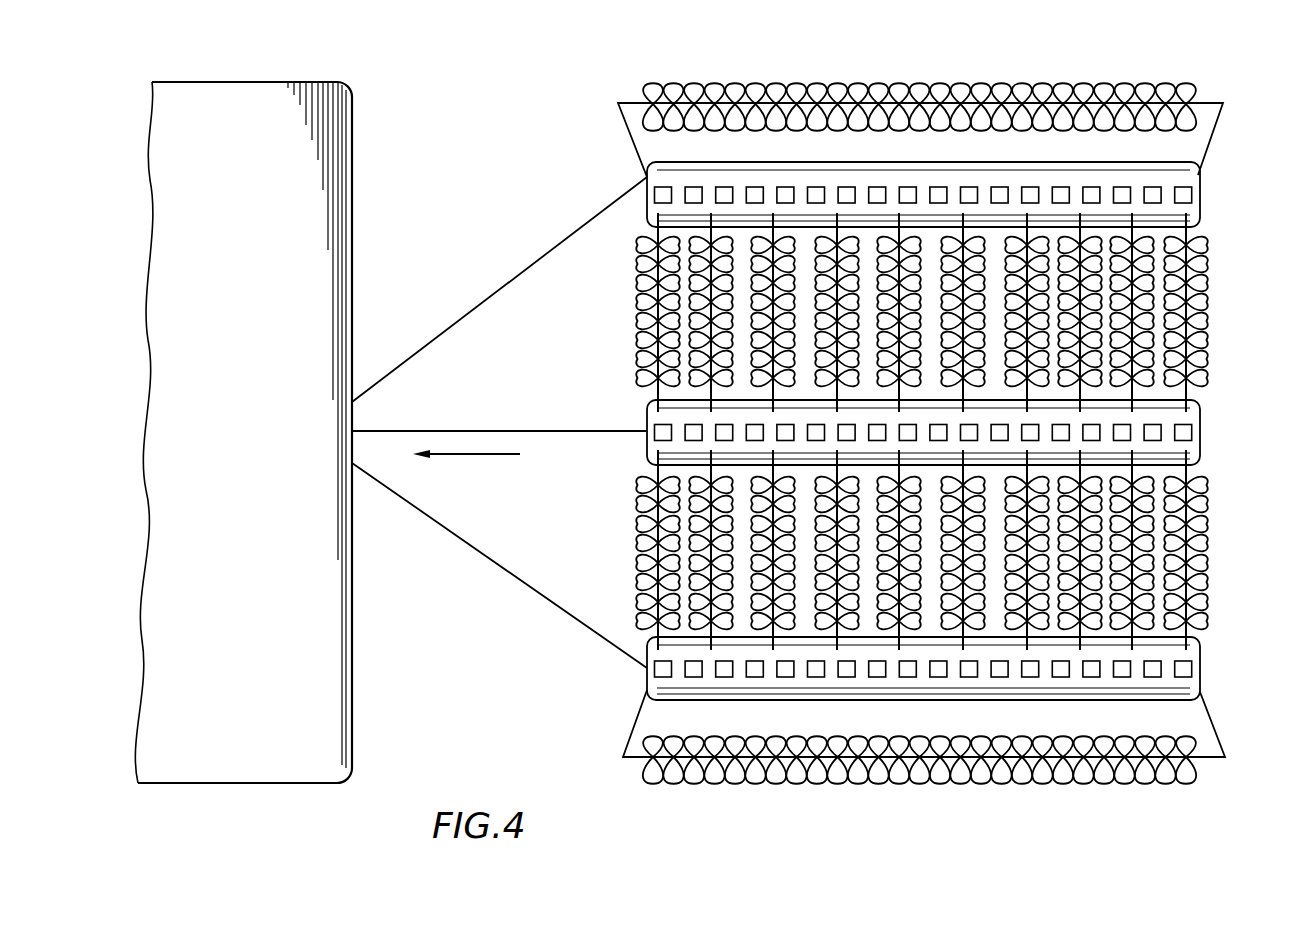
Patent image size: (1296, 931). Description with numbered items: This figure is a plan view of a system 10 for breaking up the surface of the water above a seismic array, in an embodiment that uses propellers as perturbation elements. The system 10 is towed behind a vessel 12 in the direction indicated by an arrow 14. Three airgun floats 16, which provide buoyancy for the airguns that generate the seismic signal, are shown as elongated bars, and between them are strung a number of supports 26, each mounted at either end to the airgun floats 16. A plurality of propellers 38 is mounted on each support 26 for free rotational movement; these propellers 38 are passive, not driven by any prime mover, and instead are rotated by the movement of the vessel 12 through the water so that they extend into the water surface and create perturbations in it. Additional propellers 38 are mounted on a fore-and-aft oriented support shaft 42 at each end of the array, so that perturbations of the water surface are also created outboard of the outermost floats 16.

The system 10 is at (600, 335).
The vessel 12 is at (353, 138).
The arrow 14 is at (476, 458).
The airgun floats 16 is at (1196, 177).
The support 26 is at (1186, 406).
The propellers 38 is at (1125, 92).
The fore-and-aft oriented support shaft 42 is at (622, 100).